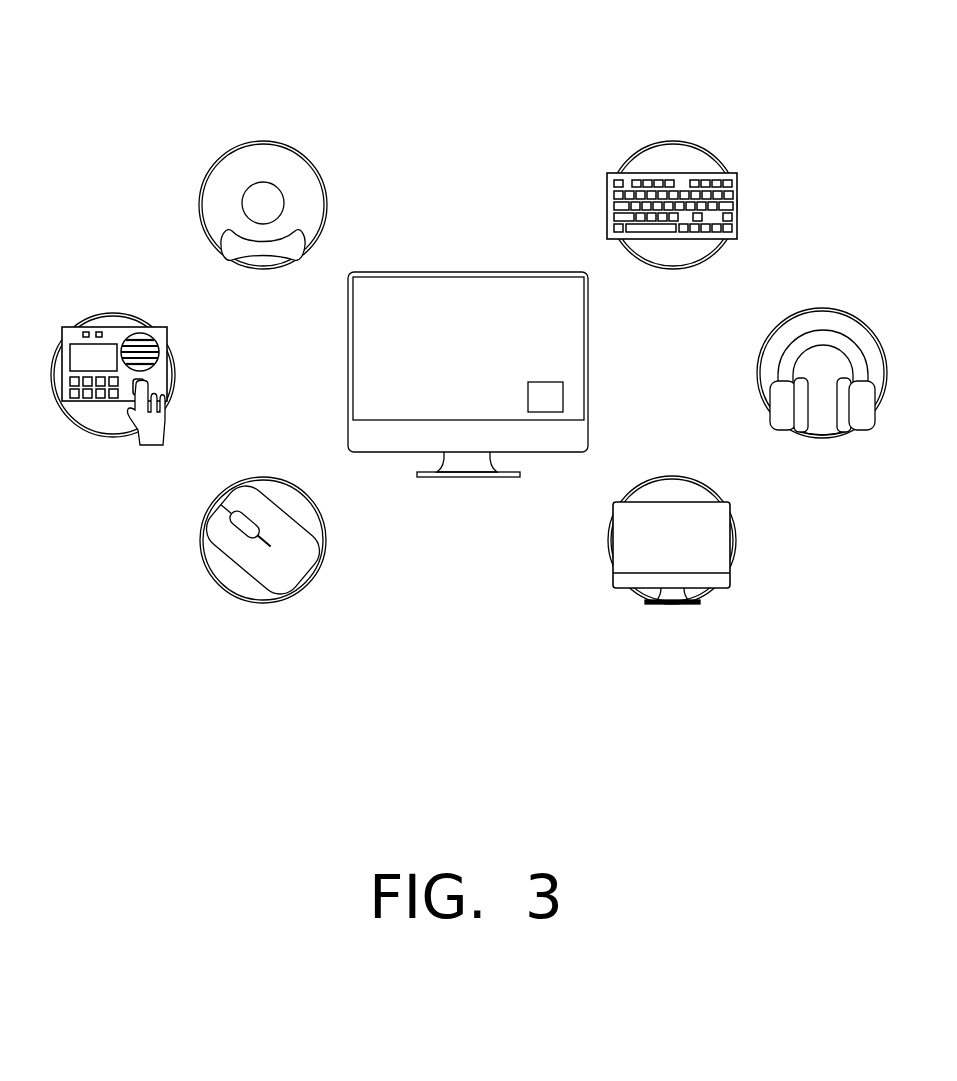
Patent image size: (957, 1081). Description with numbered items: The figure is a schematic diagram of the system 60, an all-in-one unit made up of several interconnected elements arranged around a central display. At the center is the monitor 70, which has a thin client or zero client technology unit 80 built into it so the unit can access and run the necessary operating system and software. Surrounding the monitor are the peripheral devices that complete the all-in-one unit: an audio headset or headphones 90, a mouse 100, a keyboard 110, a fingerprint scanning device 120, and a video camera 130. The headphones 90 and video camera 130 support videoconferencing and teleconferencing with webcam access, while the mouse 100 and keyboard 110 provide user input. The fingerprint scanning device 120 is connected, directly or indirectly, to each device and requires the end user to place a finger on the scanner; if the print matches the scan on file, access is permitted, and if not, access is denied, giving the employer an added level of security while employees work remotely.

The system 60 is at (468, 299).
The monitor 70 is at (707, 593).
The thin client or zero client technology unit 80 is at (545, 397).
The audio headset or headphones 90 is at (820, 310).
The mouse 100 is at (262, 605).
The keyboard 110 is at (685, 143).
The fingerprint scanning device 120 is at (98, 310).
The video camera 130 is at (262, 143).